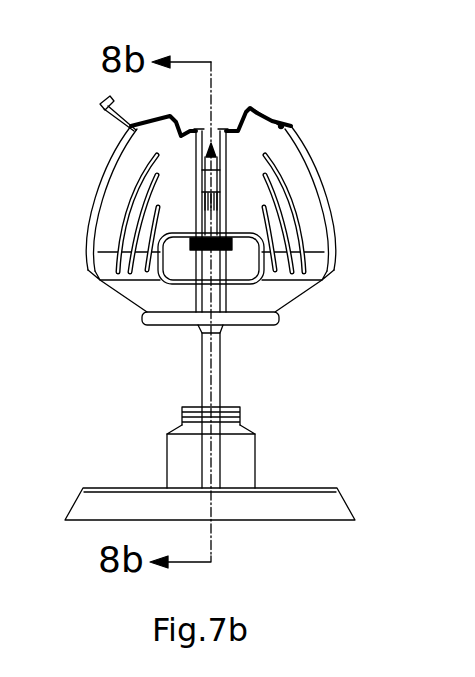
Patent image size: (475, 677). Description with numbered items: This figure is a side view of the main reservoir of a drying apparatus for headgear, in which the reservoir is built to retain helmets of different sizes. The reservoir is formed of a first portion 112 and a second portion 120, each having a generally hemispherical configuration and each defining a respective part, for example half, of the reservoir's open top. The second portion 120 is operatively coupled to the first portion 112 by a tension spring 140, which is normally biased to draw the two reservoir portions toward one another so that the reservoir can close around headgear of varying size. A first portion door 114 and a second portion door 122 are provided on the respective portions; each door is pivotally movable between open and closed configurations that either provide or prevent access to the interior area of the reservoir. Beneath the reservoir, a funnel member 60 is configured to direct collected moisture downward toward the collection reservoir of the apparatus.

The funnel member 60 is at (260, 325).
The first portion 112 is at (96, 170).
The first portion door 114 is at (101, 107).
The second portion 120 is at (319, 153).
The second portion door 122 is at (262, 110).
The tension spring 140 is at (198, 243).